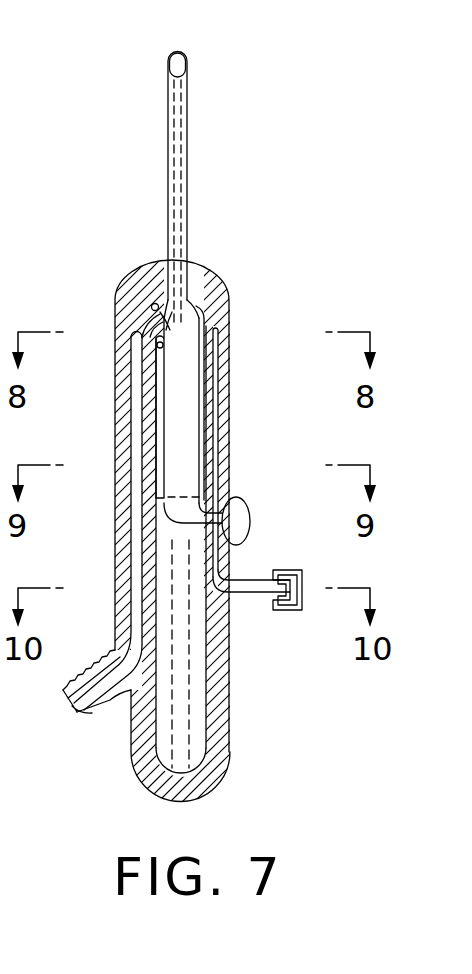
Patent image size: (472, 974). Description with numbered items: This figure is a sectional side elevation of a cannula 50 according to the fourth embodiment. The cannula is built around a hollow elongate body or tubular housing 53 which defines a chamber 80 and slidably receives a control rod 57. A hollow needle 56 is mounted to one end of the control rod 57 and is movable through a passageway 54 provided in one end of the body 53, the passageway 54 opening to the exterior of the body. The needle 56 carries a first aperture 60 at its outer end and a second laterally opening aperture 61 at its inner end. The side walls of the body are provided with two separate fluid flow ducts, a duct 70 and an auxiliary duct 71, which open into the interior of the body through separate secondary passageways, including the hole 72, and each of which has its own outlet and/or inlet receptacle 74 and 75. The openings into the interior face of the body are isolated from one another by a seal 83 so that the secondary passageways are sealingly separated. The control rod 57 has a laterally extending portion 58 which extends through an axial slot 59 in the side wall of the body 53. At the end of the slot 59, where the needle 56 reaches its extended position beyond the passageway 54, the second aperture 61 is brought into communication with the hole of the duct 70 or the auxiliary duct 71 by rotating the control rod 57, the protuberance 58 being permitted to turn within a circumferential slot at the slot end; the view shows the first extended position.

The catheter introducer assembly 50 is at (292, 735).
The tubular housing 53 is at (217, 290).
The passageway 54 is at (188, 262).
The hollow needle 56 is at (186, 158).
The control rod 57 is at (183, 432).
The laterally extending portion 58 is at (234, 520).
The axial slot 59 is at (180, 678).
The first aperture 60 is at (184, 50).
The second laterally opening aperture 61 is at (210, 334).
The duct 70 is at (137, 470).
The auxiliary duct 71 is at (218, 400).
The hole 72 is at (157, 298).
The outlet or inlet receptacle 74 is at (92, 713).
The outlet or inlet receptacle 75 is at (253, 577).
The chamber 80 is at (130, 538).
The seal 83 is at (153, 302).